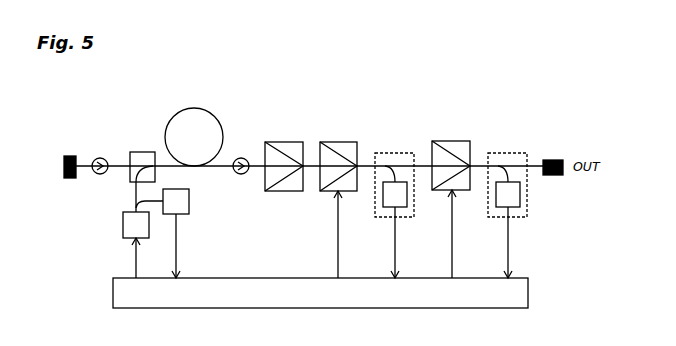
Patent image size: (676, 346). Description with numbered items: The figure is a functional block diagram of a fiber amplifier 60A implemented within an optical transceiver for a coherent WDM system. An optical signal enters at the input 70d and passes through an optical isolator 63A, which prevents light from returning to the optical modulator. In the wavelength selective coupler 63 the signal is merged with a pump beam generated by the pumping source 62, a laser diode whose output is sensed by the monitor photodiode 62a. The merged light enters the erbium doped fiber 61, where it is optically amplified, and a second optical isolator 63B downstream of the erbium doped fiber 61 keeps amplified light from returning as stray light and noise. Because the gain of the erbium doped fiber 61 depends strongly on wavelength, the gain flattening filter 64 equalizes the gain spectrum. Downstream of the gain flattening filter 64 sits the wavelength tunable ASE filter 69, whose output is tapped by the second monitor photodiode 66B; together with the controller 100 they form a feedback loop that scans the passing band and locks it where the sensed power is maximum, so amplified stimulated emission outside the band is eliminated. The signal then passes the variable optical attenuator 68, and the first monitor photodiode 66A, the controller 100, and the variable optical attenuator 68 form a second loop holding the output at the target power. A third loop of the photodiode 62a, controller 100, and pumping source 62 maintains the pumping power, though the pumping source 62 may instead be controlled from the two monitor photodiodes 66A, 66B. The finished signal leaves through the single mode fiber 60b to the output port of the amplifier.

The fiber amplifier 60A is at (495, 83).
The input port 70d is at (69, 155).
The optical isolator 63A is at (100, 158).
The wavelength selective coupler 63 is at (141, 152).
The erbium doped fiber 61 is at (199, 107).
The optical isolator 63B is at (242, 157).
The pumping source 62 is at (123, 228).
The monitor photodiode 62a is at (190, 203).
The gain flattening filter 64 is at (278, 142).
The ASE filter 69 is at (338, 142).
The second monitor photodiode 66B is at (393, 153).
The variable optical attenuator 68 is at (449, 141).
The first monitor photodiode 66A is at (508, 153).
The SMF 60b is at (534, 159).
The controller 100 is at (113, 296).